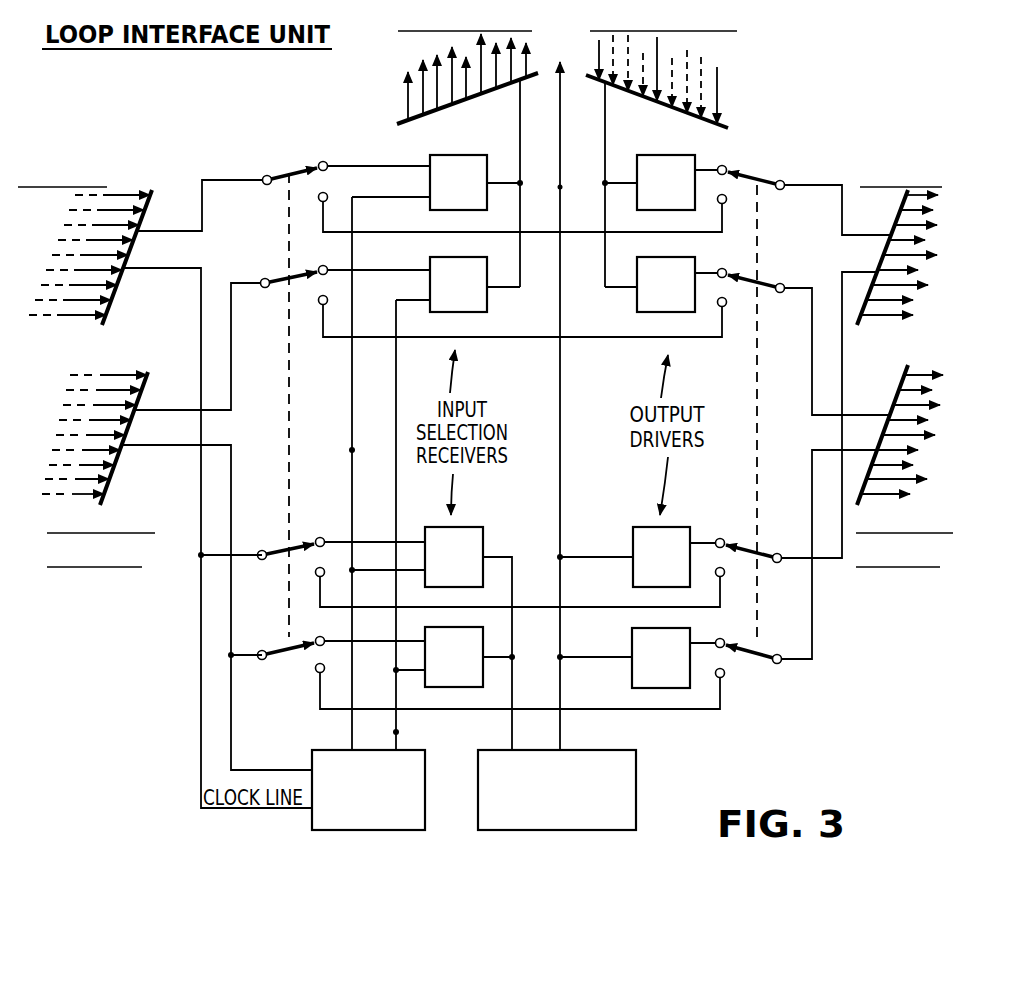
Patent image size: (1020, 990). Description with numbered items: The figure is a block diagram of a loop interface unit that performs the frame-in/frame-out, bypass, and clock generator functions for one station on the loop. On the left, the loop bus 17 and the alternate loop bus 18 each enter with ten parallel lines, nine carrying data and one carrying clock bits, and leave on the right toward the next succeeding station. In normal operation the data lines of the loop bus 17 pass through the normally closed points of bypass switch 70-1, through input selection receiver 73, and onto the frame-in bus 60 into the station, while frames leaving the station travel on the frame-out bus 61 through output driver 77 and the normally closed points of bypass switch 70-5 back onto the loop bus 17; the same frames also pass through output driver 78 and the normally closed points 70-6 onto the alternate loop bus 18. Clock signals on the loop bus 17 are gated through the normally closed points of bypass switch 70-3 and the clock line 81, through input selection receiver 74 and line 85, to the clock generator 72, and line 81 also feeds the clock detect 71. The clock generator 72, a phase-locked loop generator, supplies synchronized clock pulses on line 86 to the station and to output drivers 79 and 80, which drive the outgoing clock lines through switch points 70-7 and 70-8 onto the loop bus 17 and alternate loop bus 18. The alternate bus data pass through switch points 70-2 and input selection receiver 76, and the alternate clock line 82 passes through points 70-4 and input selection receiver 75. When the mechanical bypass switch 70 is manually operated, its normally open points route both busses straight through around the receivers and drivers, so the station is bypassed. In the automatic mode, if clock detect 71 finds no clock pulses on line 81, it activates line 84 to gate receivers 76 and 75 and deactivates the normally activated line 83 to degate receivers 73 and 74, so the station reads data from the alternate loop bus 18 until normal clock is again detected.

The loop bus 17 is at (143, 221).
The alternate loop bus 18 is at (143, 398).
The frame-in bus 60 is at (476, 96).
The frame-out bus 61 is at (655, 104).
The bypass switch 70 is at (286, 254).
The bypass switch points 70-1 is at (300, 169).
The bypass switch points 70-2 is at (283, 288).
The bypass switch points 70-3 is at (278, 560).
The bypass switch points 70-4 is at (280, 658).
The bypass switch points 70-5 is at (752, 173).
The bypass switch points 70-6 is at (765, 290).
The bypass switch points 70-7 is at (765, 557).
The bypass switch points 70-8 is at (762, 662).
The clock detect 71 is at (313, 752).
The clock generator 72 is at (631, 759).
The input selection receiver 73 is at (430, 158).
The input selection receiver 74 is at (473, 533).
The input selection receiver 75 is at (433, 632).
The input selection receiver 76 is at (485, 311).
The output driver 77 is at (695, 160).
The output driver 78 is at (638, 307).
The output driver 79 is at (636, 540).
The output driver 80 is at (633, 643).
The clock line 81 is at (201, 595).
The clock line 82 is at (230, 503).
The line 83 is at (352, 450).
The line 84 is at (396, 732).
The line 85 is at (508, 690).
The line 86 is at (561, 188).